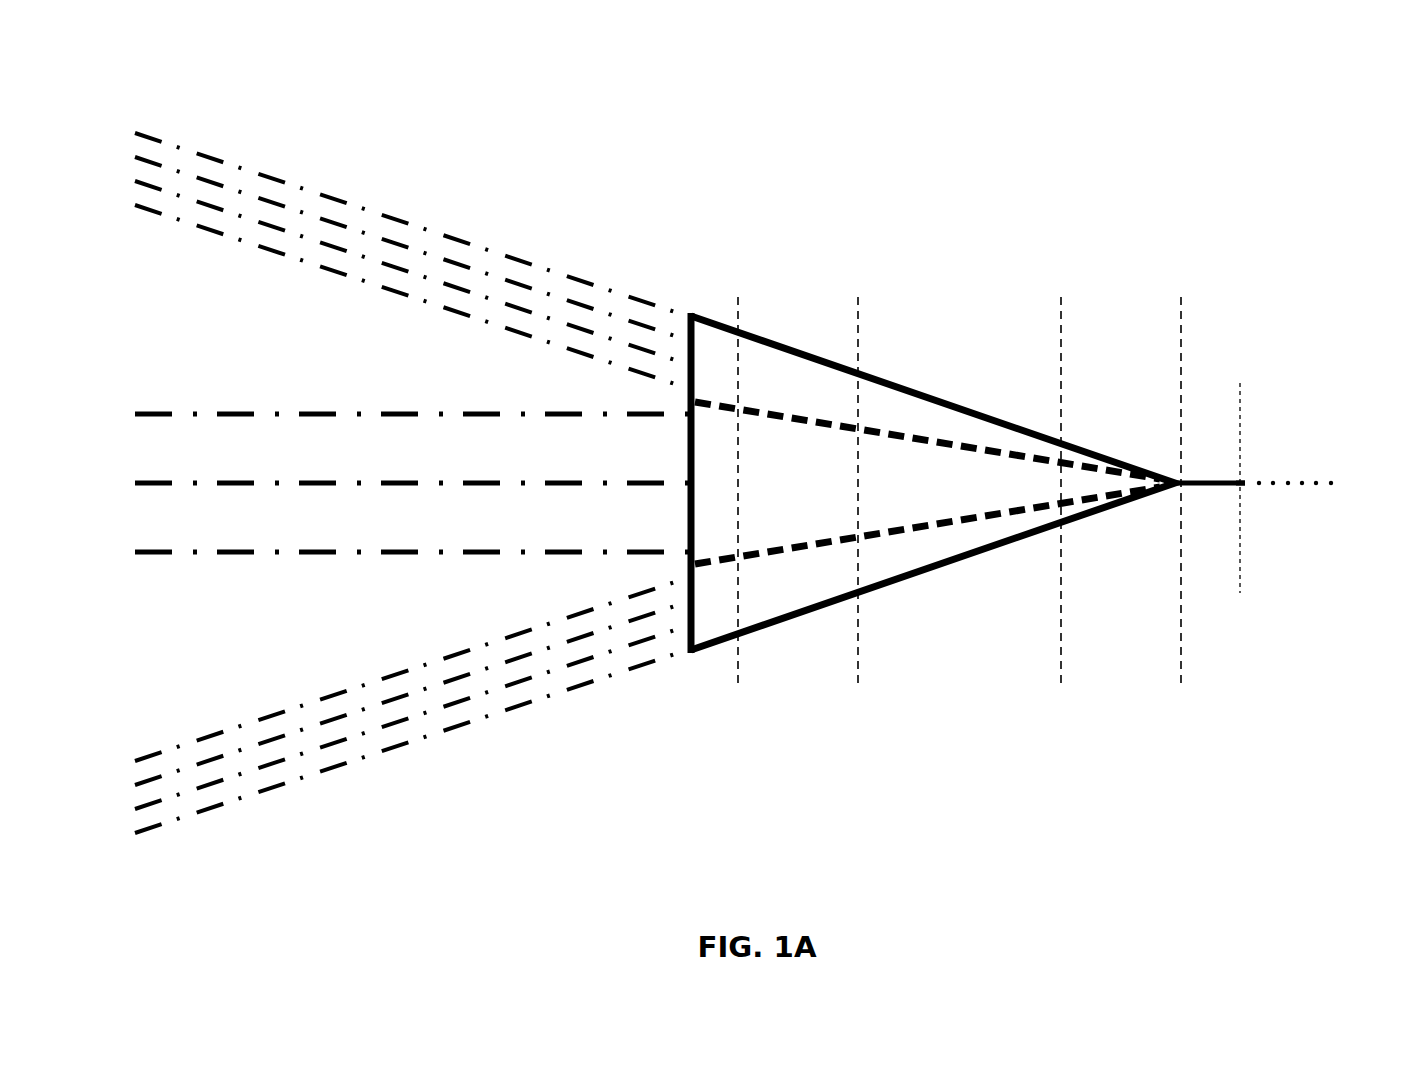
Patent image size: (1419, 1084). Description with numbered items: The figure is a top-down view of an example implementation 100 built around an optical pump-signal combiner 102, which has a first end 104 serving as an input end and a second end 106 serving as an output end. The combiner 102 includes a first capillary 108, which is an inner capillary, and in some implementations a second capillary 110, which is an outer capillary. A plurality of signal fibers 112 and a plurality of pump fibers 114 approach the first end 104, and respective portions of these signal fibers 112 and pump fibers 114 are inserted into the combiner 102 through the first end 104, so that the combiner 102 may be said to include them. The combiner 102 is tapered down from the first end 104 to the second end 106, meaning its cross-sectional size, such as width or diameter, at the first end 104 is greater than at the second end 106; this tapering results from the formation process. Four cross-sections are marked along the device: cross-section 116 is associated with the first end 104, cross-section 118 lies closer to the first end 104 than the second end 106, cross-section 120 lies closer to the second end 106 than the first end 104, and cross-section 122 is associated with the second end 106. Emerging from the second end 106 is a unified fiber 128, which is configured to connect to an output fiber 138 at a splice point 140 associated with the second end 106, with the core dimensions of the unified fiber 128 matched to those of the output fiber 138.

The example implementation 100 is at (270, 66).
The optical pump-signal combiner 102 is at (690, 283).
The first end 104 is at (689, 562).
The second end 106 is at (1245, 473).
The first capillary 108 is at (803, 547).
The second capillary 110 is at (957, 563).
The signal fibers 112 is at (497, 414).
The pump fibers 114 is at (405, 819).
The cross-section 116 is at (738, 509).
The cross-section 118 is at (858, 509).
The cross-section 120 is at (1061, 509).
The cross-section 122 is at (1181, 509).
The unified fiber 128 is at (1197, 485).
The output fiber 138 is at (1302, 486).
The splice point 140 is at (1242, 373).